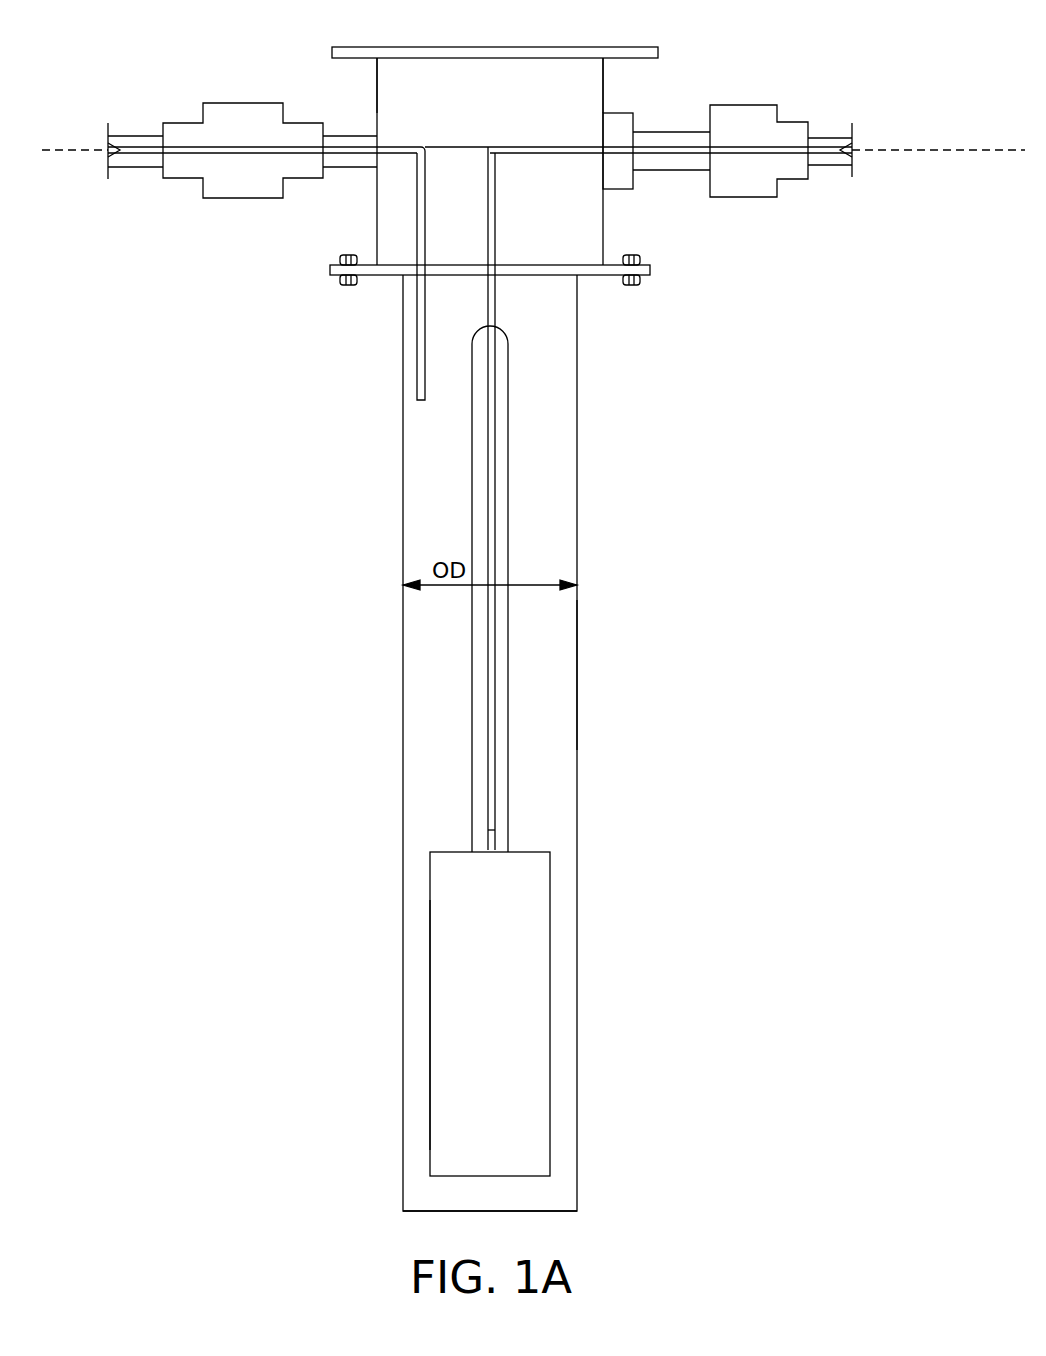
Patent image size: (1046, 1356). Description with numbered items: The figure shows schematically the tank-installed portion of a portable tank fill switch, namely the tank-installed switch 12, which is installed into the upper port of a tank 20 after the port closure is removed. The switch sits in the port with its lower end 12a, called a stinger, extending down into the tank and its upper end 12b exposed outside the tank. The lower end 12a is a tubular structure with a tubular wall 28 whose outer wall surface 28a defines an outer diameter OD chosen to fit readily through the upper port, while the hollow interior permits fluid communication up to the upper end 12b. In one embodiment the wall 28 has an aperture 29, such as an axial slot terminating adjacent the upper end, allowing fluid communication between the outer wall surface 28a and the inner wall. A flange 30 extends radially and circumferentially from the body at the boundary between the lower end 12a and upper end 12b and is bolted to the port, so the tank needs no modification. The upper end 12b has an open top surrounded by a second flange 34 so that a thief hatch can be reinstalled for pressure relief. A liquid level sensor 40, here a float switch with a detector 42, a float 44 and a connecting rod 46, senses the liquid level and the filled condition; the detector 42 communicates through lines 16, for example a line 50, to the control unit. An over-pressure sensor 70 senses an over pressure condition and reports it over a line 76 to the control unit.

The tank-installed switch 12 is at (605, 200).
The lower end 12a is at (577, 1211).
The upper end 12b is at (588, 88).
The lines 16 is at (142, 136).
The tank 20 is at (538, 1010).
The tubular wall 28 is at (565, 765).
The outer wall surface 28a is at (577, 670).
The aperture 29 is at (508, 475).
The flange 30 is at (593, 277).
The second flange 34 is at (650, 47).
The liquid level sensor 40 is at (488, 850).
The detector 42 is at (765, 183).
The float 44 is at (430, 1033).
The rod 46 is at (488, 617).
The line 50 is at (915, 148).
The over-pressure sensor 70 is at (243, 199).
The line 76 is at (62, 148).